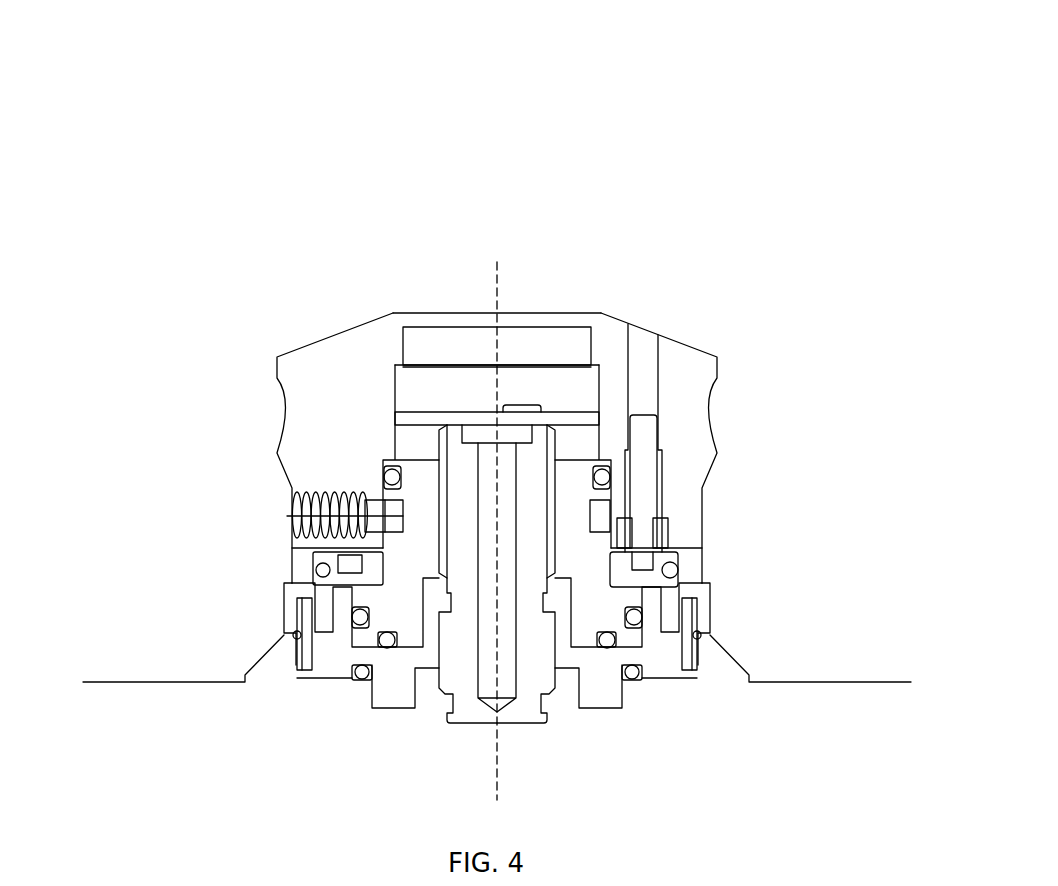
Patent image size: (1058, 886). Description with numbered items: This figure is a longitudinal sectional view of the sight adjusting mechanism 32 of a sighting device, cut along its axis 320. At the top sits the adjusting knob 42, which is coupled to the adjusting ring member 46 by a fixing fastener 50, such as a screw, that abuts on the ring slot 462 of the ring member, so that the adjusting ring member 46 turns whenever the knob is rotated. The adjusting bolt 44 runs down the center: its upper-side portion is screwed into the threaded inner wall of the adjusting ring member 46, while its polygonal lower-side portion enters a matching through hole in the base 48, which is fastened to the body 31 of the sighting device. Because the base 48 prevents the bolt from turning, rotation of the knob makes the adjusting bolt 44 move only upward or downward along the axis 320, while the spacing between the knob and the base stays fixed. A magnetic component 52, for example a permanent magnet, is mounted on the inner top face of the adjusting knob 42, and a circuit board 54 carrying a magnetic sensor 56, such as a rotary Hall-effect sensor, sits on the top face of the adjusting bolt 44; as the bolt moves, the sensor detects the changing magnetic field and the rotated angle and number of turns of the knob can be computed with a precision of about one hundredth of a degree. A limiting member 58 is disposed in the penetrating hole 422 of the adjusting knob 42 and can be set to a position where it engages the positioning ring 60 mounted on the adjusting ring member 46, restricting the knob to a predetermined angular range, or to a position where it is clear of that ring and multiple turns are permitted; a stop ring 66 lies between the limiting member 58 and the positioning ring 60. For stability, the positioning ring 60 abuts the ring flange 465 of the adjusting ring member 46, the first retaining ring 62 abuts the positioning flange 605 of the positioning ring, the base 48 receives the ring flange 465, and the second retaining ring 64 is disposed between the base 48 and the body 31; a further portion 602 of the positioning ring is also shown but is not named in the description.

The sight adjusting mechanism 32 is at (640, 113).
The axis 320 is at (505, 284).
The adjusting knob 42 is at (333, 398).
The penetrating hole 422 is at (577, 470).
The adjusting bolt 44 is at (648, 390).
The adjusting ring member 46 is at (645, 485).
The ring slot 462 is at (400, 512).
The ring flange 465 is at (672, 612).
The base 48 is at (333, 657).
The fixing fastener 50 is at (330, 510).
The magnetic component 52 is at (438, 347).
The circuit board 54 is at (412, 417).
The magnetic sensor 56 is at (522, 405).
The limiting member 58 is at (668, 530).
The positioning ring 60 is at (333, 558).
The first retaining ring 62 is at (296, 592).
The second retaining ring 64 is at (690, 650).
The stop ring 66 is at (655, 558).
The seal holder 602 is at (625, 598).
The positioning flange 605 is at (674, 586).
The body 31 is at (282, 673).